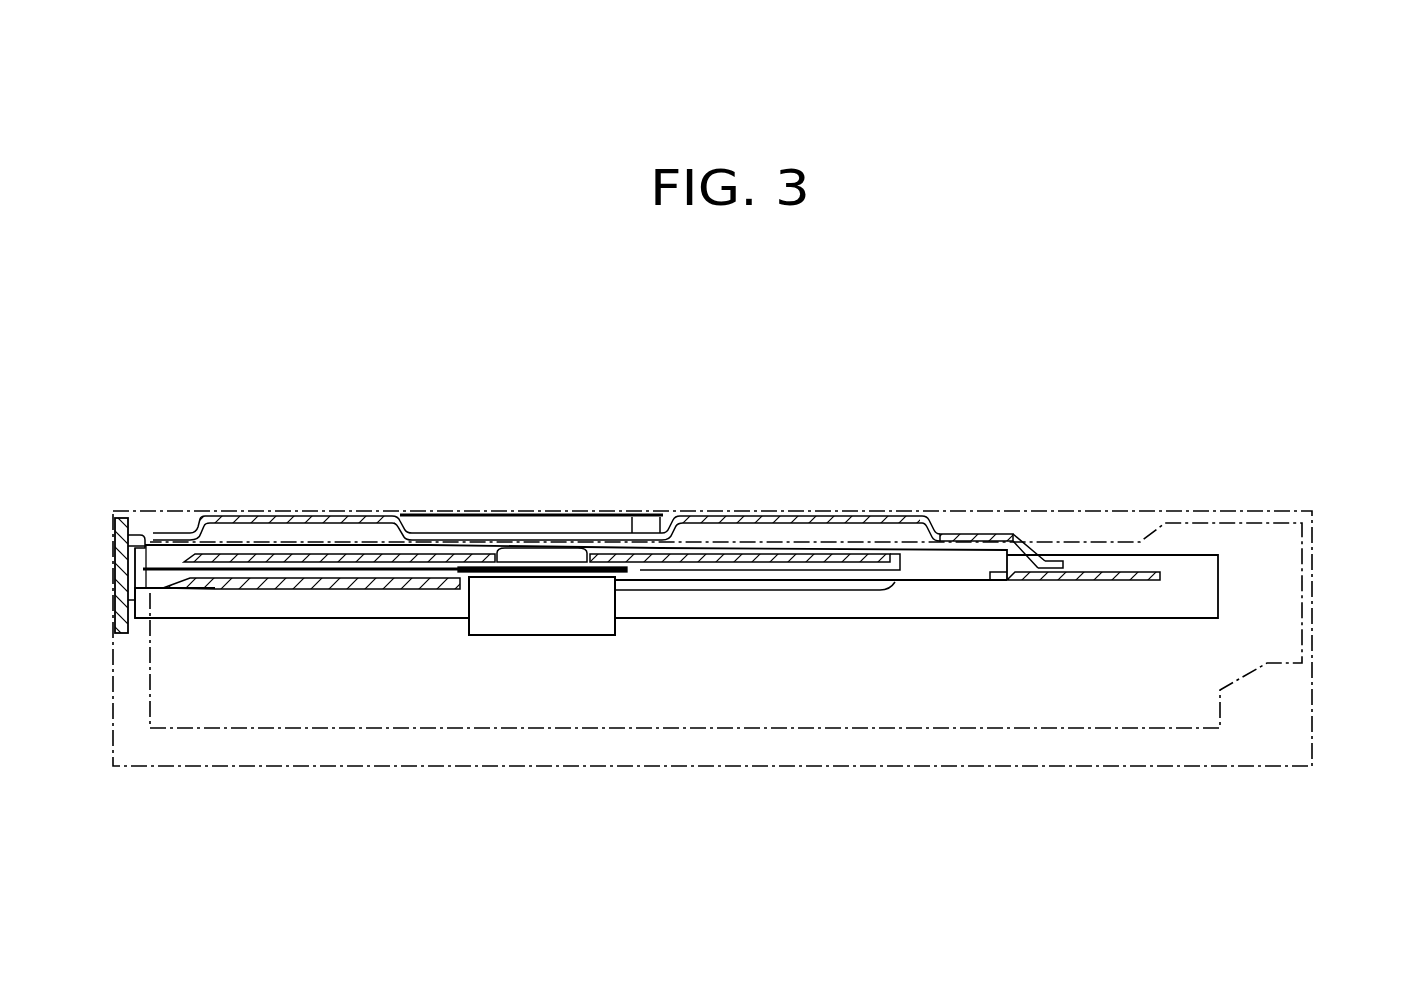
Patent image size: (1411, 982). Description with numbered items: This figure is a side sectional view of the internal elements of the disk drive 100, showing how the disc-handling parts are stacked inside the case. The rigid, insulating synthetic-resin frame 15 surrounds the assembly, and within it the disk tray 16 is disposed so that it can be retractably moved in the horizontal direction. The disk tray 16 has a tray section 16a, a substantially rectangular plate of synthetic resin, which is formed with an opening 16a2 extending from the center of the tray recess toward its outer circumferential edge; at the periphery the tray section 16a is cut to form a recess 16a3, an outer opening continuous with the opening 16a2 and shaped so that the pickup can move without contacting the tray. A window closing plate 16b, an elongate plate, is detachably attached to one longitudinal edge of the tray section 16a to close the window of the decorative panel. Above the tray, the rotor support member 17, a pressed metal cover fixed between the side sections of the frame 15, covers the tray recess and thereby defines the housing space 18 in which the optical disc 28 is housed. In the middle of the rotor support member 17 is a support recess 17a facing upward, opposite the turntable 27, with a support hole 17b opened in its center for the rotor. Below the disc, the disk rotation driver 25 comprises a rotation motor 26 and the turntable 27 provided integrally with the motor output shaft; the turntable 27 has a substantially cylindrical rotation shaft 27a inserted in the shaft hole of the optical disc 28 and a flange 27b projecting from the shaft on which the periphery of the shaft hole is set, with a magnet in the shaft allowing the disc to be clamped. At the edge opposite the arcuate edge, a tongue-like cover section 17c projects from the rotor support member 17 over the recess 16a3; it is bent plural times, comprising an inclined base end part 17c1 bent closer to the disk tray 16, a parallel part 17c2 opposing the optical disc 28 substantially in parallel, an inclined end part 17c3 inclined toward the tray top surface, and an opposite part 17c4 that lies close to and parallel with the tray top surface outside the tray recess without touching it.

The disk drive 100 is at (1260, 511).
The frame 15 is at (1312, 592).
The disk tray 16 is at (1218, 603).
The tray section 16a is at (1137, 582).
The opening 16a2 is at (403, 592).
The recess 16a3 is at (995, 580).
The window closing plate 16b is at (115, 590).
The rotor support member 17 is at (616, 546).
The support recess 17a is at (663, 516).
The support hole 17b is at (631, 533).
The cover section 17c is at (982, 546).
The inclined base end part 17c1 is at (934, 534).
The parallel part 17c2 is at (960, 541).
The inclined end part 17c3 is at (1031, 548).
The opposite part 17c4 is at (1048, 568).
The housing space 18 is at (381, 548).
The disk rotation driver 25 is at (527, 636).
The rotation motor 26 is at (580, 620).
The turntable 27 is at (628, 573).
The rotation shaft 27a is at (507, 548).
The flange 27b is at (465, 572).
The optical disc 28 is at (895, 585).